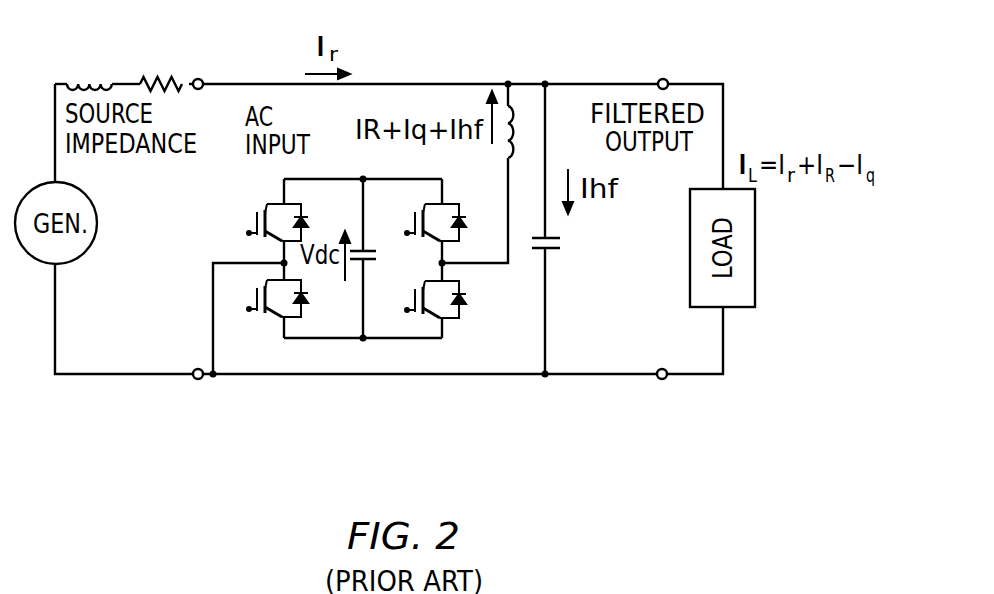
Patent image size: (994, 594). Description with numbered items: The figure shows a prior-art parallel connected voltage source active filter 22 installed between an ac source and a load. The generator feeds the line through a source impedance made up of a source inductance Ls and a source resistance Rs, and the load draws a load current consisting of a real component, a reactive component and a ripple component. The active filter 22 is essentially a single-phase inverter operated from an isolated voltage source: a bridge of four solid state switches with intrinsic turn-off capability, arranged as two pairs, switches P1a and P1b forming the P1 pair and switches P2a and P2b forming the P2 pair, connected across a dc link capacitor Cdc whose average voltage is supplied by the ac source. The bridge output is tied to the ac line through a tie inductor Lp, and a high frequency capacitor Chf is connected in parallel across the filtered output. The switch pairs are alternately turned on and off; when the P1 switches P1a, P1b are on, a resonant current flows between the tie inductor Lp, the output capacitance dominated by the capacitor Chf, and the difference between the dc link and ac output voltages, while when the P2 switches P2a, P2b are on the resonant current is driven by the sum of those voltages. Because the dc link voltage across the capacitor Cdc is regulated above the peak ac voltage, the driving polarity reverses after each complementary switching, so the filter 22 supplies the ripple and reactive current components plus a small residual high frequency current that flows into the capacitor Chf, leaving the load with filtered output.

The parallel connected voltage source active filter 22 is at (365, 216).
The source inductance Ls is at (89, 67).
The source resistance Rs is at (161, 68).
The tie inductor Lp is at (490, 173).
The high frequency capacitor Chf is at (569, 229).
The link capacitor Cdc is at (386, 258).
The switch P1a is at (260, 222).
The switch P1b is at (461, 299).
The switch P2a is at (448, 207).
The switch P2b is at (271, 310).